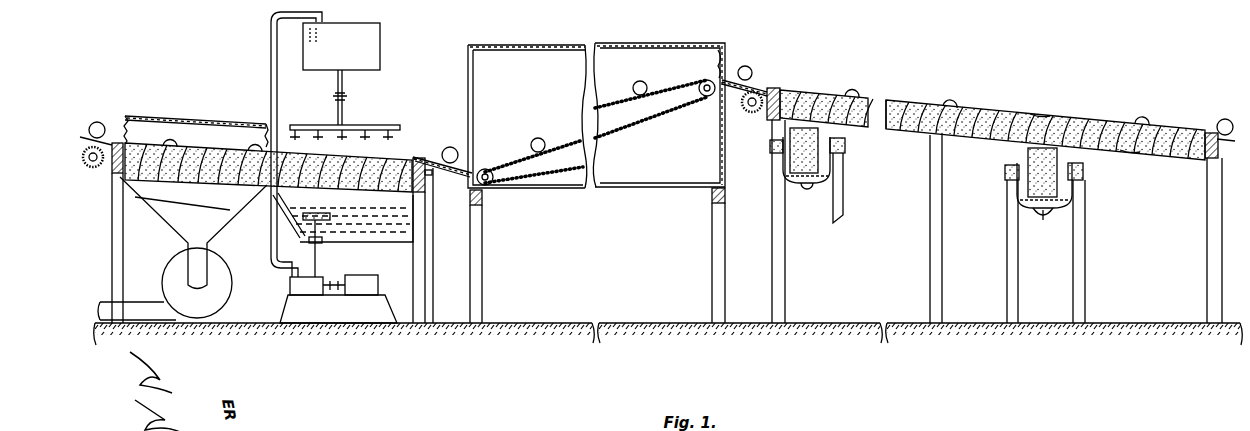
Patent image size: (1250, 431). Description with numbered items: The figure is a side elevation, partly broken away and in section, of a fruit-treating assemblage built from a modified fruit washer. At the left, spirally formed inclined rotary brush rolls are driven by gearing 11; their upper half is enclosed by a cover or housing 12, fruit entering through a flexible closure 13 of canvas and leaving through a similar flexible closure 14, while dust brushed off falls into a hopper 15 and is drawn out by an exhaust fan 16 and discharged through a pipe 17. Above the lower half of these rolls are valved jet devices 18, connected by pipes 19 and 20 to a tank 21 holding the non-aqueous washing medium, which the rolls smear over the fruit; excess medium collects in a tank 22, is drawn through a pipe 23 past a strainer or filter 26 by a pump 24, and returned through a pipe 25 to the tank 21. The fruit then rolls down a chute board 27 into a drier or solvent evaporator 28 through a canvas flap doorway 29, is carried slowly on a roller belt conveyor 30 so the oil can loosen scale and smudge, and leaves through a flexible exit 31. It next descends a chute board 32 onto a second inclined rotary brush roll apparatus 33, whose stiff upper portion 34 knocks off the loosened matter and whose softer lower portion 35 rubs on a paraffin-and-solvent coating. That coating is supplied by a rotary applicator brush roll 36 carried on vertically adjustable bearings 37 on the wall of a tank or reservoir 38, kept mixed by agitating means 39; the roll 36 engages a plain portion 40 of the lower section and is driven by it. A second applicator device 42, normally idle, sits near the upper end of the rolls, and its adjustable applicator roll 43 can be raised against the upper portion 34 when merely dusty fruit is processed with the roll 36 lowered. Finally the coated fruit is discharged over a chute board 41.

The gearing 11 is at (93, 168).
The cover or housing 12 is at (186, 118).
The flexible closure 13 is at (125, 120).
The flexible closure 14 is at (263, 139).
The hopper 15 is at (172, 211).
The exhaust fan 16 is at (224, 181).
The pipe 17 is at (105, 302).
The jet devices 18 is at (367, 138).
The pipe 19 is at (320, 127).
The pipe 20 is at (343, 80).
The tank 21 is at (370, 49).
The tank 22 is at (385, 242).
The pipe 23 is at (319, 244).
The pump 24 is at (290, 285).
The pipe 25 is at (271, 53).
The strainer or filter 26 is at (322, 213).
The chute board 27 is at (438, 188).
The drier or solvent evaporator 28 is at (528, 48).
The canvas flap doorway 29 is at (468, 150).
The roller belt conveyor 30 is at (660, 122).
The flexible exit 31 is at (727, 58).
The chute board 32 is at (775, 90).
The inclined rotary brush roll apparatus 33 is at (992, 105).
The upper portion of the brush rolls 34 is at (900, 133).
The lower portion of the brush rolls 35 is at (1126, 152).
The rotary applicator brush roll 36 is at (1028, 154).
The vertically adjustable bearings 37 is at (1020, 180).
The tank or reservoir 38 is at (1035, 210).
The agitating means 39 is at (1040, 226).
The portion of the roll section 40 is at (1036, 120).
The chute board 41 is at (1222, 120).
The second applicator device 42 is at (819, 188).
The adjustable applicator roll 43 is at (800, 157).